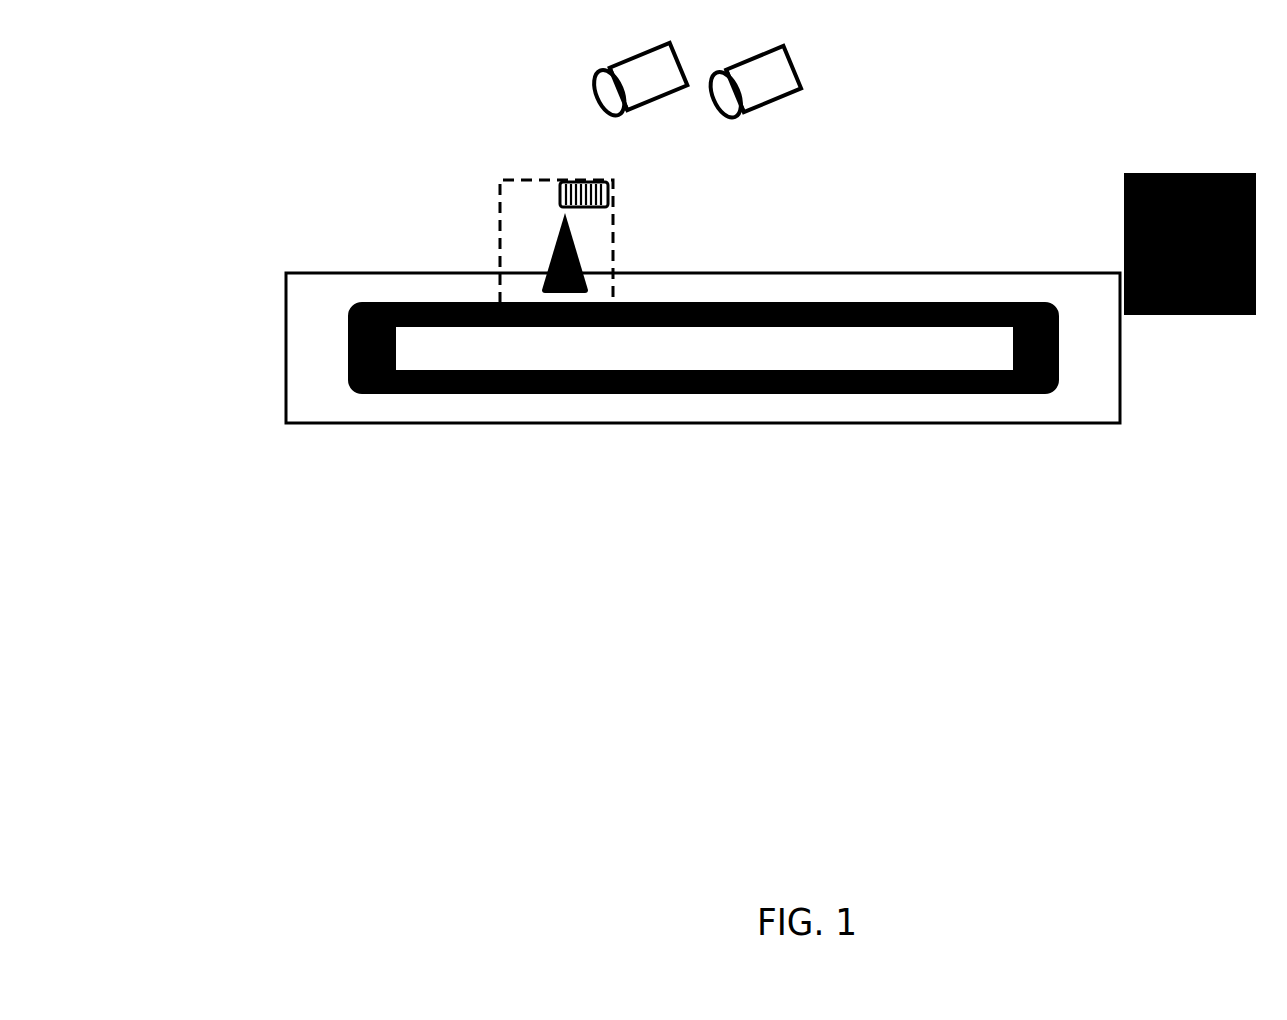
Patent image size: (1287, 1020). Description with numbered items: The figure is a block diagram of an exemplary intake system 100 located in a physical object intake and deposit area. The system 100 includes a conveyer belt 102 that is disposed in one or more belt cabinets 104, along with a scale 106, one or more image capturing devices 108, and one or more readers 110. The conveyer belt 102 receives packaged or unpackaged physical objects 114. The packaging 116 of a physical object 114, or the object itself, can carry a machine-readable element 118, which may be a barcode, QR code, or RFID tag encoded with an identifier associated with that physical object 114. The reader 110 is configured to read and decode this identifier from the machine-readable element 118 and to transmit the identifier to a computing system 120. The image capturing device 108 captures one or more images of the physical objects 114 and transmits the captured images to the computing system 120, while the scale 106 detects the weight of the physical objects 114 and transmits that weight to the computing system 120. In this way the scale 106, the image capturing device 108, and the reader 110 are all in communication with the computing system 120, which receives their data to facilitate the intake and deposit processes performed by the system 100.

The intake system 100 is at (1140, 118).
The conveyer belt 102 is at (1015, 395).
The belt cabinet 104 is at (343, 397).
The scale 106 is at (902, 350).
The image capturing device 108 is at (802, 88).
The reader 110 is at (635, 55).
The physical object 114 is at (553, 253).
The packaging 116 is at (617, 240).
The machine-readable element 118 is at (582, 182).
The computing system 120 is at (1187, 315).